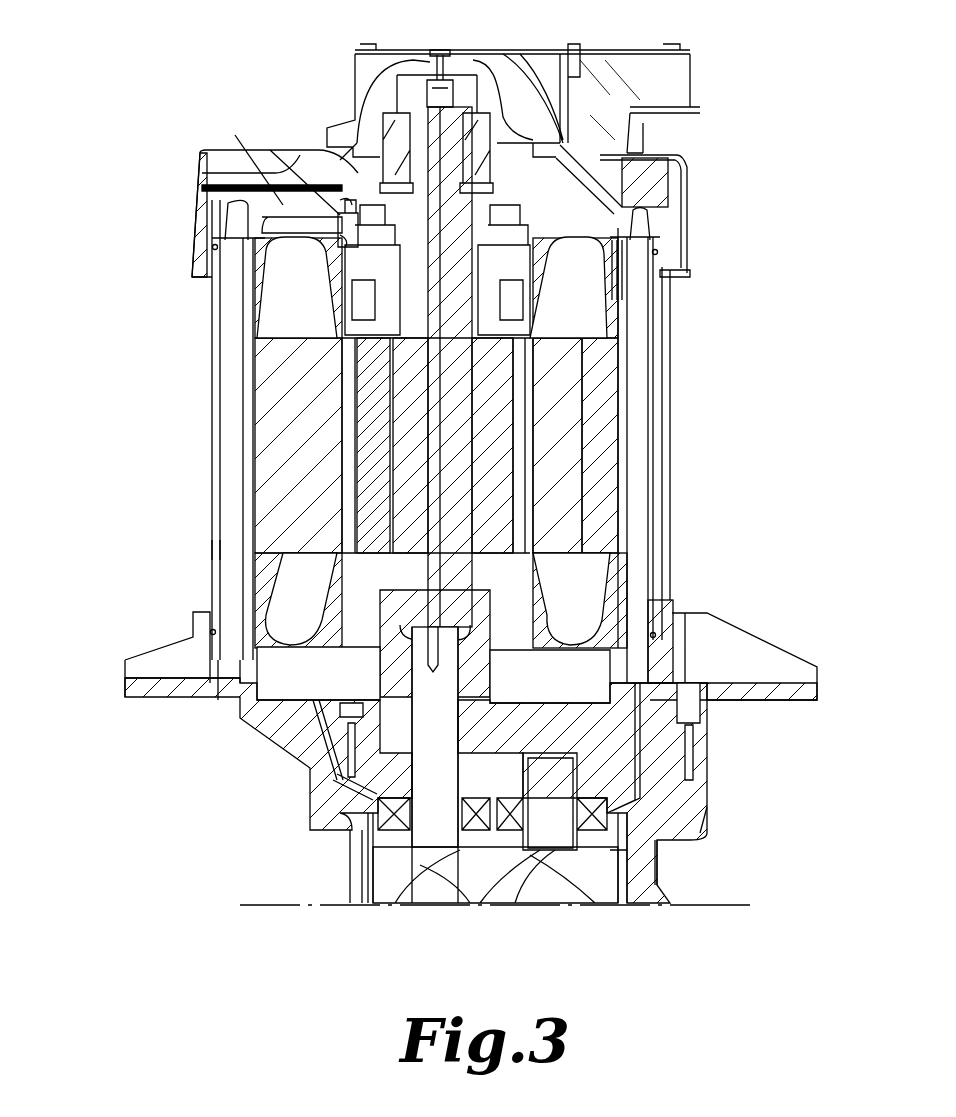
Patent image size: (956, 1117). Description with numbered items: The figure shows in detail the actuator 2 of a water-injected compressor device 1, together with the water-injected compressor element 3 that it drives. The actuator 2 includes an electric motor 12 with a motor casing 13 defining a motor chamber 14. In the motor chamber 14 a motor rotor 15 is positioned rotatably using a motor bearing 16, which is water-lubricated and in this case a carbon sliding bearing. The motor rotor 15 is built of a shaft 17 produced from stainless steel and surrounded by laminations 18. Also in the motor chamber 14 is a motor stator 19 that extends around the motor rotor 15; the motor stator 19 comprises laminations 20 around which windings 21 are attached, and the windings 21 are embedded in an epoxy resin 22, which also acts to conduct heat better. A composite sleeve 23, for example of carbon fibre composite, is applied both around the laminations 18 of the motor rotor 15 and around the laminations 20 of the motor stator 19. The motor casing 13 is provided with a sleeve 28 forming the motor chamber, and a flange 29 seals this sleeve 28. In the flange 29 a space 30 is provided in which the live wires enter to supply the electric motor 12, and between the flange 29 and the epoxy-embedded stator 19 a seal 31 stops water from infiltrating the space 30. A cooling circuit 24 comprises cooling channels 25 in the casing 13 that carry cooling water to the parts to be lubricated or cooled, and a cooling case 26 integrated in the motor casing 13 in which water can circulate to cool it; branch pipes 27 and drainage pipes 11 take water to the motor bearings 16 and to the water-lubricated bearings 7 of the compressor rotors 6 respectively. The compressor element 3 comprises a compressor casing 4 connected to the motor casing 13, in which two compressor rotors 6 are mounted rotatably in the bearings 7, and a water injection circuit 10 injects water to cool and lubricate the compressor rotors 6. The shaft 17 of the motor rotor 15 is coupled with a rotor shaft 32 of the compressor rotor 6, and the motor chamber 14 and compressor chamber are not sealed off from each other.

The water-injected compressor device 1 is at (823, 70).
The actuator 2 is at (106, 331).
The water-injected compressor element 3 is at (106, 821).
The compressor casing 4 is at (647, 873).
The compressor rotors 6 is at (413, 870).
The water-lubricated bearings 7 is at (380, 810).
The water injection circuit 10 is at (320, 728).
The drainage pipes 11 is at (330, 782).
The electric motor 12 is at (255, 387).
The motor casing 13 is at (243, 360).
The motor chamber 14 is at (245, 515).
The motor rotor 15 is at (400, 443).
The motor bearing 16 is at (393, 140).
The shaft 17 is at (535, 358).
The laminations 18 is at (495, 428).
The motor stator 19 is at (560, 470).
The laminations 20 is at (290, 415).
The windings 21 is at (300, 300).
The epoxy resin 22 is at (260, 273).
The composite sleeve 23 is at (345, 468).
The cooling circuit 24 is at (562, 130).
The cooling channels 25 is at (533, 140).
The cooling case 26 is at (228, 548).
The branch pipes 27 is at (452, 50).
The sleeve 28 is at (214, 318).
The flange 29 is at (212, 172).
The space 30 is at (378, 187).
The seal 31 is at (353, 213).
The rotor shaft 32 is at (440, 760).